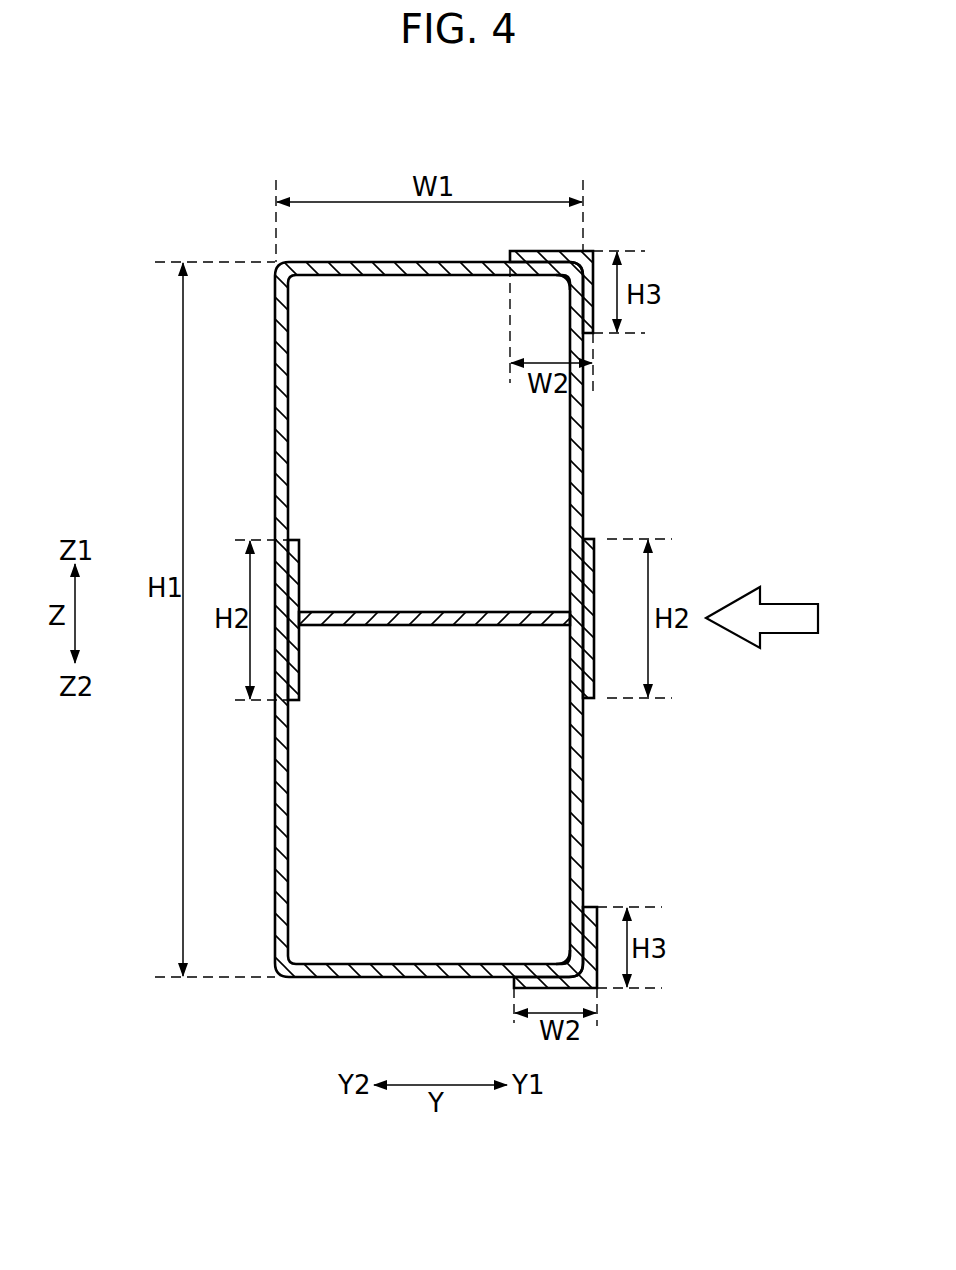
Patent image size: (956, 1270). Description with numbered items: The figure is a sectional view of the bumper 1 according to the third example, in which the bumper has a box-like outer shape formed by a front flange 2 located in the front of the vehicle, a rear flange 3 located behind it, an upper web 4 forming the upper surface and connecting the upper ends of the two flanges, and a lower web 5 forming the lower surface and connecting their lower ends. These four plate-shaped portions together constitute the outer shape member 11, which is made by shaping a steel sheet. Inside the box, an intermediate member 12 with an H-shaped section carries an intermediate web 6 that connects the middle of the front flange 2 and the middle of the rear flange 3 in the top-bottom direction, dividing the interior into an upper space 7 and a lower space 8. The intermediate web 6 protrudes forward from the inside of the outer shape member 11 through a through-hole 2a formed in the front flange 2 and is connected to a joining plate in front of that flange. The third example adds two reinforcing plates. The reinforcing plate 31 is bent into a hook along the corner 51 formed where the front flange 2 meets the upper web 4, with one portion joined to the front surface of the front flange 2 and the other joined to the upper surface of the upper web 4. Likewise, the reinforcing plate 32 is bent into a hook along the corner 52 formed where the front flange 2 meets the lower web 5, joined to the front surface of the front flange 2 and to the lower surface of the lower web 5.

The bumper 1 is at (620, 162).
The front flange 2 is at (583, 408).
The through-hole 2a is at (576, 630).
The rear flange 3 is at (275, 370).
The upper web 4 is at (408, 270).
The lower web 5 is at (409, 968).
The intermediate web 6 is at (419, 611).
The upper space 7 is at (575, 440).
The lower space 8 is at (575, 796).
The outer shape member 11 is at (586, 752).
The intermediate member 12 is at (472, 594).
The reinforcing plate 31 is at (583, 251).
The reinforcing plate 32 is at (597, 988).
The corner 51 is at (560, 283).
The corner 52 is at (562, 957).